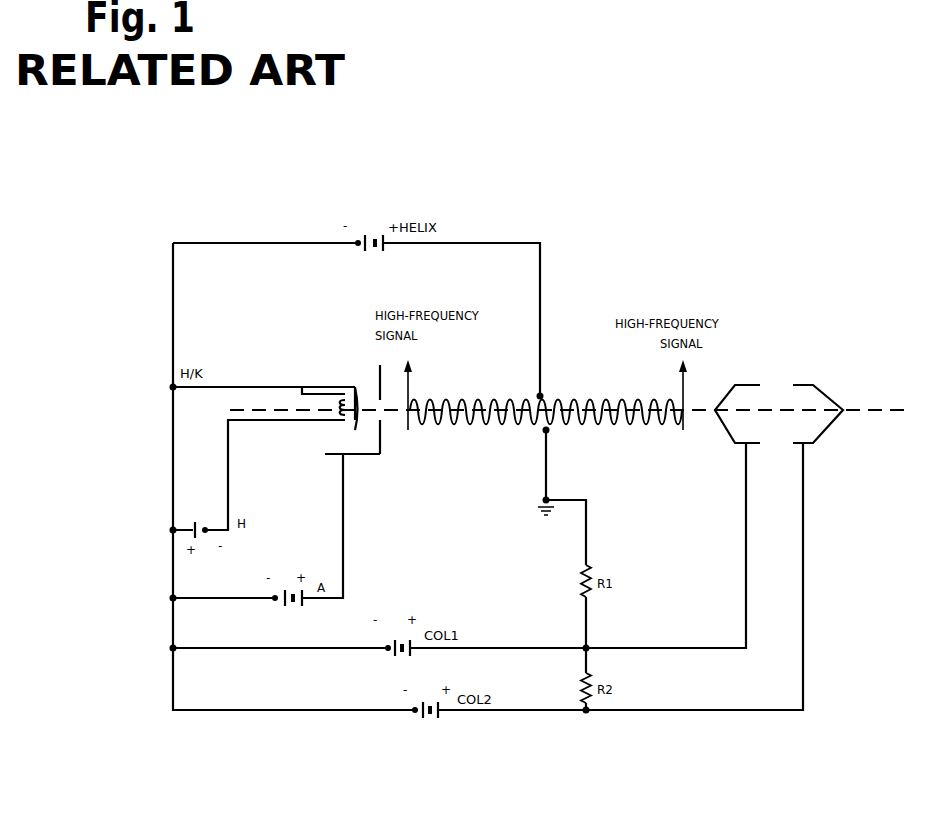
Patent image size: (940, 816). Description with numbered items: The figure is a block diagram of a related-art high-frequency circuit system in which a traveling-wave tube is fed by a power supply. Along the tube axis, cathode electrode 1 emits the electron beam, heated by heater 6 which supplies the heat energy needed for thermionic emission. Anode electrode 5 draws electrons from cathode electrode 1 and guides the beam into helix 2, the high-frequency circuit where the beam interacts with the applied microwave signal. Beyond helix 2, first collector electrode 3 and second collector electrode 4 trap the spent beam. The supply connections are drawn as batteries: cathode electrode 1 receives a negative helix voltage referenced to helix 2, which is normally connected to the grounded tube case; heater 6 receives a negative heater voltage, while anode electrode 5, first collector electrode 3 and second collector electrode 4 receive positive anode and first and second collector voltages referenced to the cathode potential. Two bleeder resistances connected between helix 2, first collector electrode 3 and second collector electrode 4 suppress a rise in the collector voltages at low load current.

The cathode electrode 1 is at (352, 383).
The helix 2 is at (598, 432).
The first collector electrode 3 is at (745, 380).
The second collector electrode 4 is at (810, 380).
The anode electrode 5 is at (383, 445).
The heater 6 is at (298, 425).